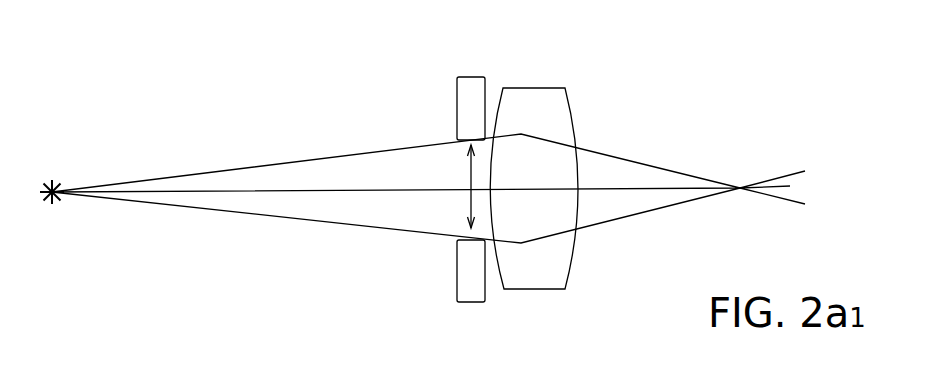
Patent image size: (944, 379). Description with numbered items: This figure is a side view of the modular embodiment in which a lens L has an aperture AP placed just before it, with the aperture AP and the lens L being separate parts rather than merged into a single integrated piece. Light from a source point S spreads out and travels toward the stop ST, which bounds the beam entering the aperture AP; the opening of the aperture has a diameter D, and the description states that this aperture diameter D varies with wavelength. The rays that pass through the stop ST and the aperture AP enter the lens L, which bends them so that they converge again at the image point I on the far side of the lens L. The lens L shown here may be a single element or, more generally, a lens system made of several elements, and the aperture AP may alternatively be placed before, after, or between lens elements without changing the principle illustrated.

The light source / object point S is at (55, 178).
The aperture stop ST is at (468, 76).
The lens L is at (567, 87).
The aperture diameter D is at (460, 186).
The aperture AP is at (411, 246).
The image point I is at (739, 192).